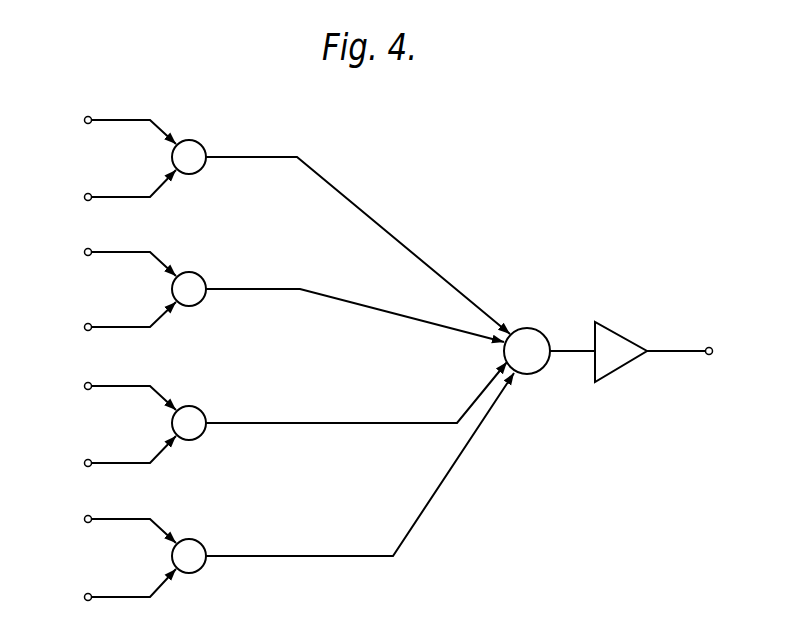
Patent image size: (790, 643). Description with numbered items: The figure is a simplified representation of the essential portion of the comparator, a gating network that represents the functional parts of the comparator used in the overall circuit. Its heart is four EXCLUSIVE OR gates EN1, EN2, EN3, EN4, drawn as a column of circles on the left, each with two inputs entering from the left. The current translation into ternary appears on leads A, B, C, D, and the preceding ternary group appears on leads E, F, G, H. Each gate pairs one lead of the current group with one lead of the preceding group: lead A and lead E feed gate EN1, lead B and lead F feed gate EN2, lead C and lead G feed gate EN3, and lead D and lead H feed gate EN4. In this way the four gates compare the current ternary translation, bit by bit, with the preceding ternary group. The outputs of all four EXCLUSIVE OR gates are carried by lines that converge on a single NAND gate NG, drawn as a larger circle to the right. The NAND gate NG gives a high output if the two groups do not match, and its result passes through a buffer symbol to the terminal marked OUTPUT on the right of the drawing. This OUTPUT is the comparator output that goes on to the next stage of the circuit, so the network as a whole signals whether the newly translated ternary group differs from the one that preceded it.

The lead A is at (116, 125).
The lead B is at (116, 257).
The lead C is at (116, 391).
The lead D is at (116, 524).
The lead E is at (116, 191).
The lead F is at (116, 322).
The lead G is at (116, 457).
The lead H is at (116, 590).
The EXCLUSIVE OR gate EN1 is at (341, 222).
The EXCLUSIVE OR gate EN2 is at (338, 292).
The EXCLUSIVE OR gate EN3 is at (339, 401).
The EXCLUSIVE OR gate EN4 is at (343, 473).
The NAND gate NG is at (549, 335).
The output OUTPUT is at (667, 353).